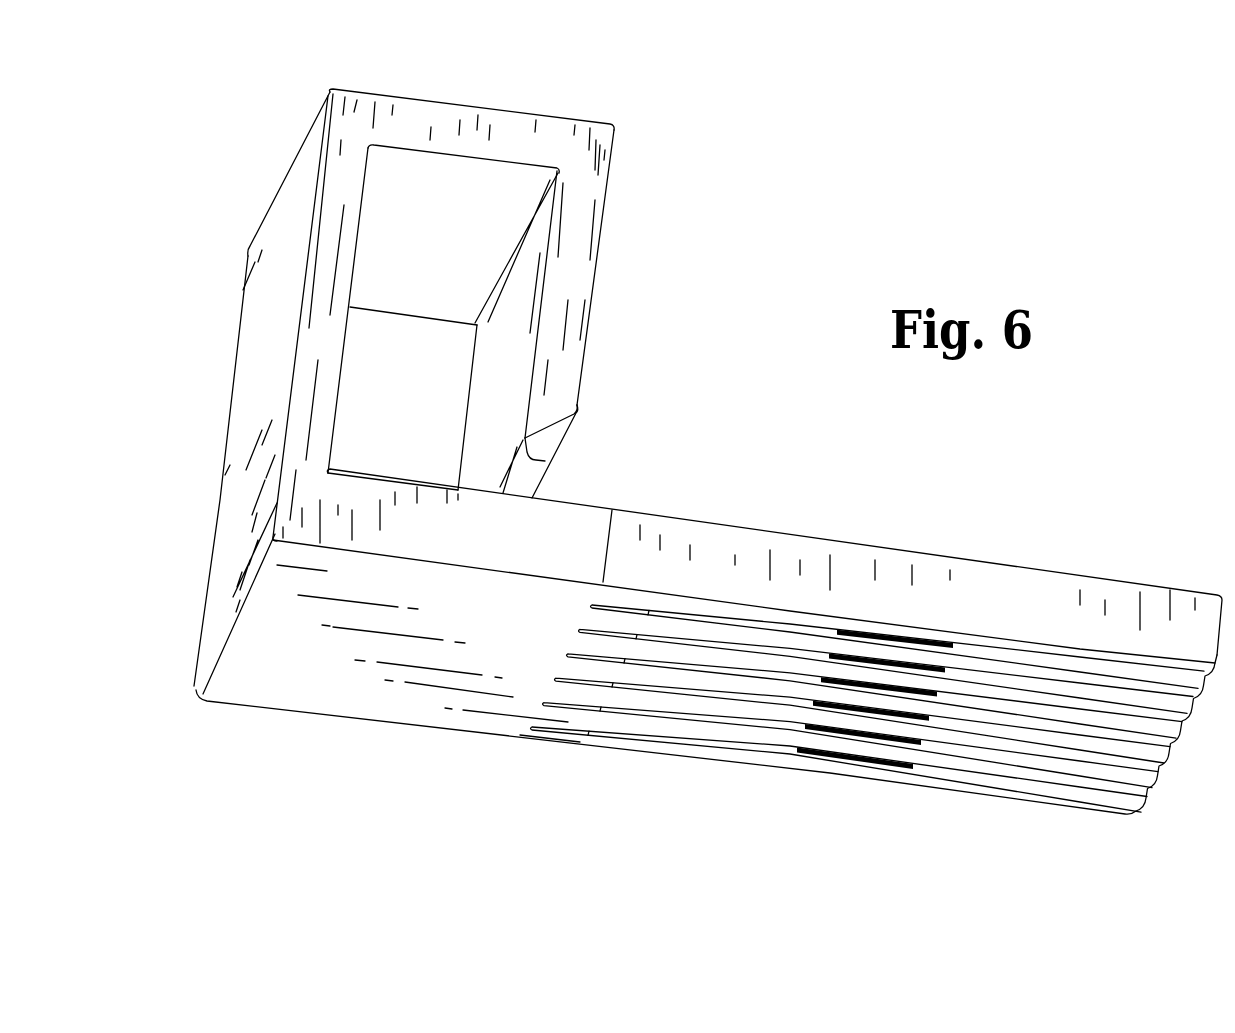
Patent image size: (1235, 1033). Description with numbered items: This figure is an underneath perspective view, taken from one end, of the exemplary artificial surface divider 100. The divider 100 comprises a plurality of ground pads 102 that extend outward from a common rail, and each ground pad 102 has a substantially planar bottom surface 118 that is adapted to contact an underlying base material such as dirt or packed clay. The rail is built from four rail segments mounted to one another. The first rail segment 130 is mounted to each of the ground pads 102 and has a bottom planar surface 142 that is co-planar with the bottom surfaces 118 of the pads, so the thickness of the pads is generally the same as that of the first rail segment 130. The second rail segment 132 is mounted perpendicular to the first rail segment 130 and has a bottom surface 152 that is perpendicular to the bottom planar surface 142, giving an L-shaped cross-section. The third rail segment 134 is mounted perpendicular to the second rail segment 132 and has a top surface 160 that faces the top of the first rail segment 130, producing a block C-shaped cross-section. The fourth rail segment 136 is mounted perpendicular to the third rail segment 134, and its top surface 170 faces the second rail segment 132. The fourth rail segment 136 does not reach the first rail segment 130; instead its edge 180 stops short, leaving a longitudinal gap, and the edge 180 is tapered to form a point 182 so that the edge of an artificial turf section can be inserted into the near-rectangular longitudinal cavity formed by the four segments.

The artificial surface divider 100 is at (960, 160).
The ground pad 102 is at (993, 592).
The bottom surface 118 is at (827, 775).
The first rail segment 130 is at (552, 539).
The second rail segment 132 is at (300, 403).
The third rail segment 134 is at (453, 125).
The fourth rail segment 136 is at (576, 270).
The bottom planar surface 142 is at (392, 714).
The bottom surface 152 is at (238, 537).
The top surface 160 is at (419, 313).
The top surface 170 is at (478, 430).
The edge 180 is at (568, 439).
The point 182 is at (534, 461).